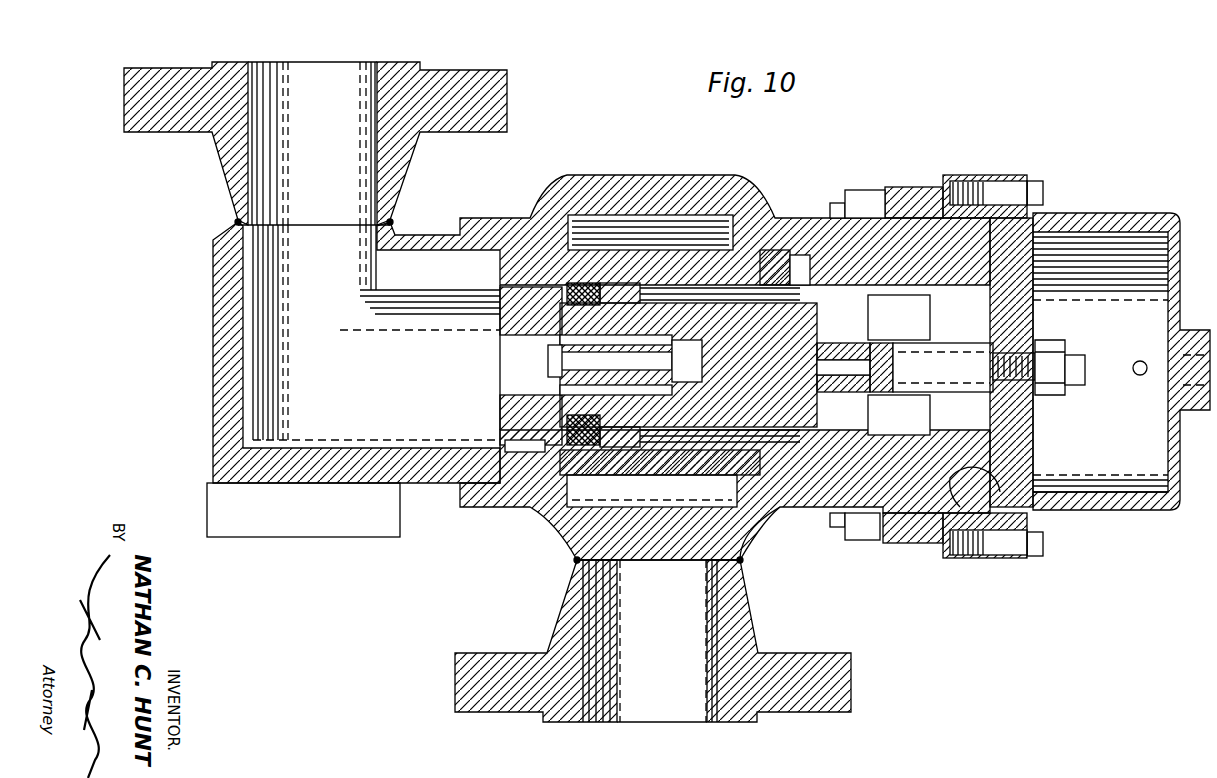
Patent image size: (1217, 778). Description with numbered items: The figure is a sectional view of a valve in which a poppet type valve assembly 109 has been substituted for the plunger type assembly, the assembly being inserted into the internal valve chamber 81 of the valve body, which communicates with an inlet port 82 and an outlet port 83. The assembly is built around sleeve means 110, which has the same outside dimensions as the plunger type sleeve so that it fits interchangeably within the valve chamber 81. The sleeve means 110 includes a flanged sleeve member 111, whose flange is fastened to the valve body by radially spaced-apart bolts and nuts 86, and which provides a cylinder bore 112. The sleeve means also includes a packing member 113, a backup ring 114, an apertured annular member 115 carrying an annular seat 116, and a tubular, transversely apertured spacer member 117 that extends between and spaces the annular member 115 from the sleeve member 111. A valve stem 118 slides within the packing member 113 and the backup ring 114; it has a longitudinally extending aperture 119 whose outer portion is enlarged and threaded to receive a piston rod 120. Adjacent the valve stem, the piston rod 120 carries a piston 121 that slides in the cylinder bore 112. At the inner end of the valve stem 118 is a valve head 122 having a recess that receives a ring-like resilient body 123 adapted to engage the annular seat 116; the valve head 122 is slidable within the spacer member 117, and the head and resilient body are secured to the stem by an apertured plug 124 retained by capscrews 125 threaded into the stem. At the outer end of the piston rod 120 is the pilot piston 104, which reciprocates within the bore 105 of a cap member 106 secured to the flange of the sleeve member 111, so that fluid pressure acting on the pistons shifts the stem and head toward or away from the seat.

The valve chamber 81 is at (814, 480).
The inlet port 82 is at (345, 78).
The outlet port 83 is at (672, 690).
The bolts and nuts 86 is at (855, 192).
The pilot piston 104 is at (1020, 430).
The bore 105 is at (1068, 500).
The cap member 106 is at (1097, 212).
The poppet type valve assembly 109 is at (637, 236).
The sleeve means 110 is at (684, 250).
The flanged sleeve member 111 is at (867, 240).
The cylinder bore 112 is at (910, 432).
The packing member 113 is at (770, 250).
The backup ring 114 is at (784, 273).
The annular member 115 is at (500, 430).
The annular seat 116 is at (553, 413).
The spacer member 117 is at (612, 518).
The valve stem 118 is at (705, 295).
The aperture 119 is at (728, 555).
The piston rod 120 is at (915, 335).
The piston 121 is at (897, 365).
The valve head 122 is at (560, 283).
The resilient body 123 is at (586, 290).
The apertured plug 124 is at (500, 305).
The capscrews 125 is at (560, 387).